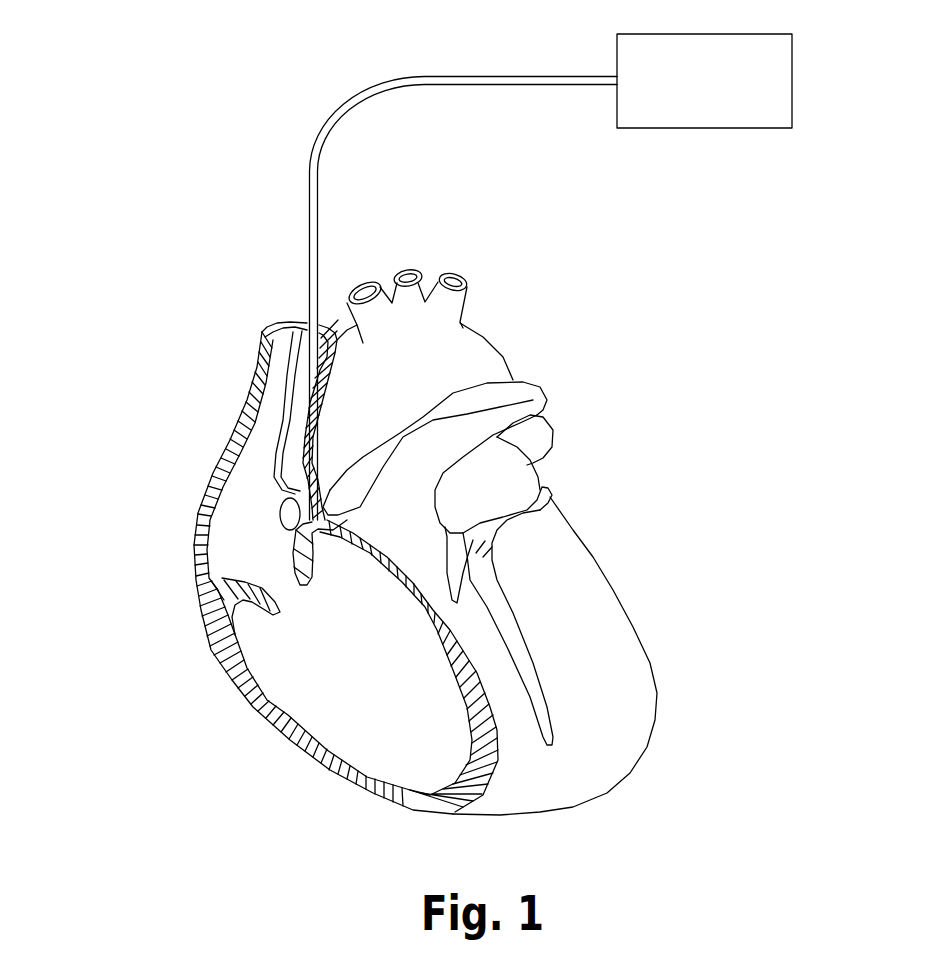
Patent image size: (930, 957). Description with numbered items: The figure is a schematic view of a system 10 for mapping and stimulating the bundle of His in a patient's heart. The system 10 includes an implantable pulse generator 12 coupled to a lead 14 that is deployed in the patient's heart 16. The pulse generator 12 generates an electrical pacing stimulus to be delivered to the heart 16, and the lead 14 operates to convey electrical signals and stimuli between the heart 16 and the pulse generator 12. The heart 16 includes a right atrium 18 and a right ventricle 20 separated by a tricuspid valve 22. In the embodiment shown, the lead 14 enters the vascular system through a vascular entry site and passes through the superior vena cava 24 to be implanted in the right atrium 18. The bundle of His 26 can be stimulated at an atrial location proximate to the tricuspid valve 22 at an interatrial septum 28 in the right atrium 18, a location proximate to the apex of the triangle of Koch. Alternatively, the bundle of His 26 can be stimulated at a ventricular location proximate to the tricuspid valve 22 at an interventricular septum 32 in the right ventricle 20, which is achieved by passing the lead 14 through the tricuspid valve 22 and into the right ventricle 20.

The system 10 is at (118, 140).
The implantable pulse generator 12 is at (792, 78).
The lead 14 is at (482, 87).
The heart 16 is at (520, 342).
The right atrium 18 is at (253, 493).
The right ventricle 20 is at (373, 710).
The tricuspid valve 22 is at (222, 578).
The superior vena cava 24 is at (262, 332).
The bundle of His 26 is at (280, 518).
The interatrial septum 28 is at (533, 400).
The interventricular septum 32 is at (300, 520).